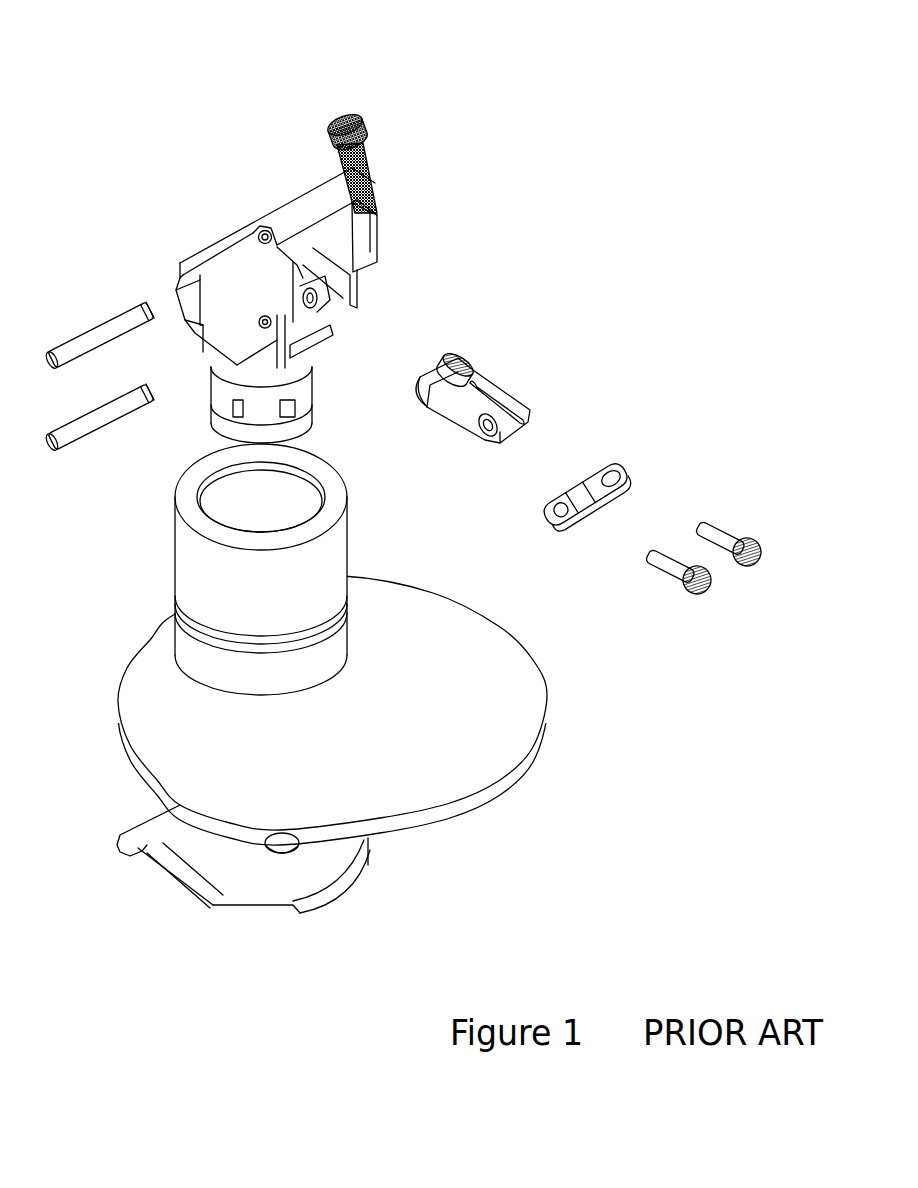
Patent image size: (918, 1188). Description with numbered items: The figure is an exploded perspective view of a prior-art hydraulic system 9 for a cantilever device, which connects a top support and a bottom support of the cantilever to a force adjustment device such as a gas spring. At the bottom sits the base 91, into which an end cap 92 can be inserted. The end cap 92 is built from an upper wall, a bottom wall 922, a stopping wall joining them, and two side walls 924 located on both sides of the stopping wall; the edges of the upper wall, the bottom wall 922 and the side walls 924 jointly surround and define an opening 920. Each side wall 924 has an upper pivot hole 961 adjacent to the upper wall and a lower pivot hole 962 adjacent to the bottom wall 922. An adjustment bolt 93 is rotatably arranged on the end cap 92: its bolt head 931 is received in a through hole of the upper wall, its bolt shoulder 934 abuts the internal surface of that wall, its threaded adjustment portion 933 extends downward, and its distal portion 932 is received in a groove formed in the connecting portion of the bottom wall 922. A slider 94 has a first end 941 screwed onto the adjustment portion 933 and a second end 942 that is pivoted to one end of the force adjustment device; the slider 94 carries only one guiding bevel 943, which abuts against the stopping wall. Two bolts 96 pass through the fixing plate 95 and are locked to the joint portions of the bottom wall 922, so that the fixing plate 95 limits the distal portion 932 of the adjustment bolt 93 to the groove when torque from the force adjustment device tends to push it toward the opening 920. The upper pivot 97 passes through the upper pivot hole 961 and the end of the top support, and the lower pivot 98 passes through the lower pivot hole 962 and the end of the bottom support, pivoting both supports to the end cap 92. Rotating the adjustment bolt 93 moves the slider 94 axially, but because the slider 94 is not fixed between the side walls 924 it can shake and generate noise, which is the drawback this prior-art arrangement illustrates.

The hydraulic system 9 is at (476, 131).
The base 91 is at (162, 650).
The end cap 92 is at (384, 254).
The opening 920 is at (360, 298).
The bottom wall 922 is at (313, 334).
The side walls 924 is at (200, 322).
The adjustment bolt 93 is at (355, 115).
The bolt head 931 is at (394, 154).
The distal portion 932 is at (381, 214).
The adjustment portion 933 is at (372, 173).
The bolt shoulder 934 is at (362, 128).
The slider 94 is at (530, 409).
The first end 941 is at (473, 368).
The second end 942 is at (474, 400).
The guiding bevel 943 is at (420, 396).
The fixing plate 95 is at (620, 464).
The bolts 96 is at (727, 528).
The upper pivot hole 961 is at (263, 230).
The lower pivot hole 962 is at (260, 326).
The upper pivot 97 is at (77, 342).
The lower pivot 98 is at (75, 450).